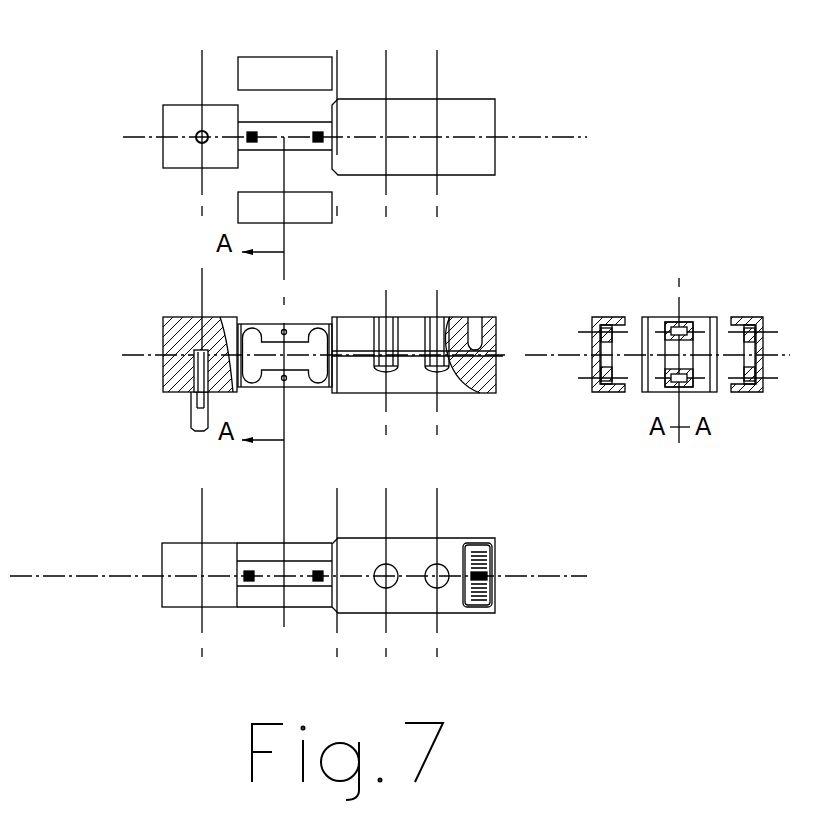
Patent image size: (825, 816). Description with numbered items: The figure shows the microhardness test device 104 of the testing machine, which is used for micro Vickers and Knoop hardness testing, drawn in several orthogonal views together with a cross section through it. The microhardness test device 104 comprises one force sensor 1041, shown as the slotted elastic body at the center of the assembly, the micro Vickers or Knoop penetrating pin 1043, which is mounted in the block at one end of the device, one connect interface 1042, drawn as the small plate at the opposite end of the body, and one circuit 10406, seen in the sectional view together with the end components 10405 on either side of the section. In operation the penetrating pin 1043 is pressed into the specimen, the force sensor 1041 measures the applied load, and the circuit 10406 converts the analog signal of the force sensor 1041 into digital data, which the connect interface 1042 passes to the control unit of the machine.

The microhardness test device 104 is at (477, 118).
The force sensor 1041 is at (297, 347).
The connect interface 1042 is at (490, 595).
The micro Vickers or Knoop penetrating pin 1043 is at (190, 420).
The end washer bracket 10405 is at (607, 317).
The circuit 10406 is at (790, 433).